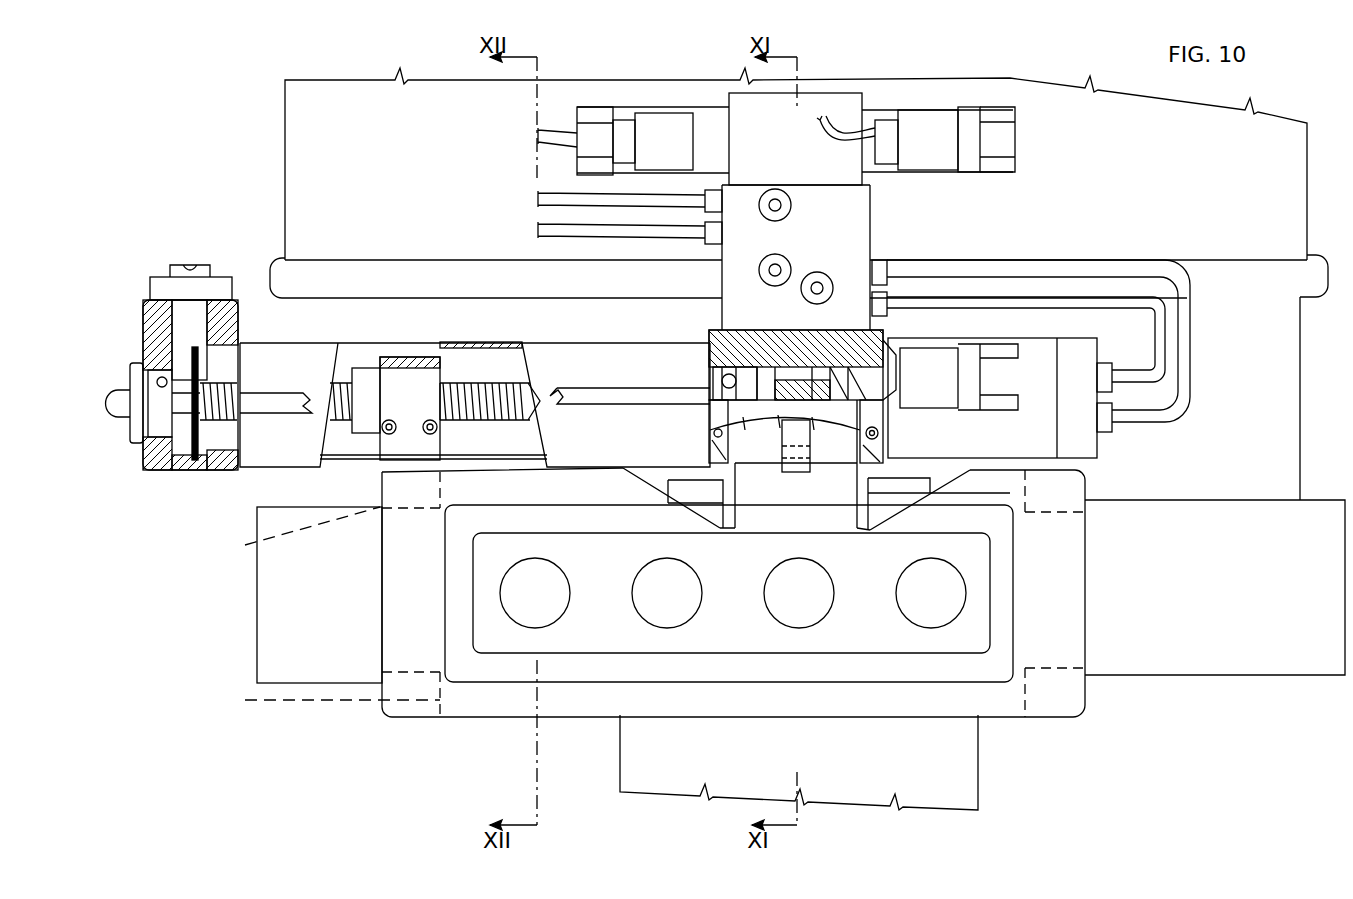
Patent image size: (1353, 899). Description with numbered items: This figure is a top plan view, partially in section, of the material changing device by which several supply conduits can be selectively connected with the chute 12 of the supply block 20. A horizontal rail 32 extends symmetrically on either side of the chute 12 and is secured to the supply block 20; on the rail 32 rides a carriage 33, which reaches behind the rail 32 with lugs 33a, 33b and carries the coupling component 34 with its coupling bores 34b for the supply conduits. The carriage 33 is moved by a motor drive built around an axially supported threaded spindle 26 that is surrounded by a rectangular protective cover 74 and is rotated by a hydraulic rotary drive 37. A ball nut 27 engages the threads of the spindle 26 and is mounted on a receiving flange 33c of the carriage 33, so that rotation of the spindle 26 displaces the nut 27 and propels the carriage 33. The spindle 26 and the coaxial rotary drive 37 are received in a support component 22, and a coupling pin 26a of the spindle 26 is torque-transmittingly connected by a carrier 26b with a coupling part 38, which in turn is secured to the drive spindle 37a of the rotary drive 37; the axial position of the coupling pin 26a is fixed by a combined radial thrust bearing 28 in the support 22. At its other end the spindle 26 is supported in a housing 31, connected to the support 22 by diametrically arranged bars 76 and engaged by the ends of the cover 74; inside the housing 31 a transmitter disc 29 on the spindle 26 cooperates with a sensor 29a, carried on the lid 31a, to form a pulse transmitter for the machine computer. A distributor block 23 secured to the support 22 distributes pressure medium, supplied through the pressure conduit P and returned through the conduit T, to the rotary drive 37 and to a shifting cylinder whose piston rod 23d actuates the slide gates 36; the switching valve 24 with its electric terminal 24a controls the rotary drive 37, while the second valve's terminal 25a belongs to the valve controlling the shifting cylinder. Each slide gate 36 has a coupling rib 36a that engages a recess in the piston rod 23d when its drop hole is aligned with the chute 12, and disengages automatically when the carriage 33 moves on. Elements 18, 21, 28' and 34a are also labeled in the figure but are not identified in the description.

The chute 12 is at (805, 615).
The base 18 is at (945, 770).
The supply block 20 is at (282, 322).
The housing block 21 is at (335, 150).
The support component 22 is at (872, 350).
The distributor block 23 is at (835, 228).
The piston rod 23d is at (713, 438).
The switching valve 24 is at (850, 92).
The electric terminal 24a is at (672, 143).
The electric terminal 25a is at (972, 390).
The threaded spindle 26 is at (480, 380).
The coupling pin 26a is at (803, 397).
The carrier 26b is at (738, 363).
The ball nut 27 is at (395, 407).
The combined radial thrust bearing 28 is at (453, 362).
The shim plate 28' is at (150, 430).
The transmitter disc 29 is at (173, 458).
The sensor 29a is at (190, 322).
The housing 31 is at (158, 345).
The lid 31a is at (185, 300).
The horizontal rail 32 is at (310, 585).
The carriage 33 is at (380, 642).
The lug 33a is at (317, 697).
The lug 33b is at (287, 534).
The receiving flange 33c is at (390, 455).
The coupling component 34 is at (1087, 628).
The plate holes 34a is at (490, 665).
The coupling bore 34b is at (598, 630).
The slide gate 36 is at (885, 505).
The coupling rib 36a is at (757, 460).
The hydraulic rotary drive 37 is at (1082, 428).
The drive spindle 37a is at (835, 390).
The coupling part 38 is at (848, 382).
The protective cover 74 is at (567, 328).
The bar 76 is at (270, 403).
The pressure conduit P is at (609, 197).
The return conduit T is at (608, 228).